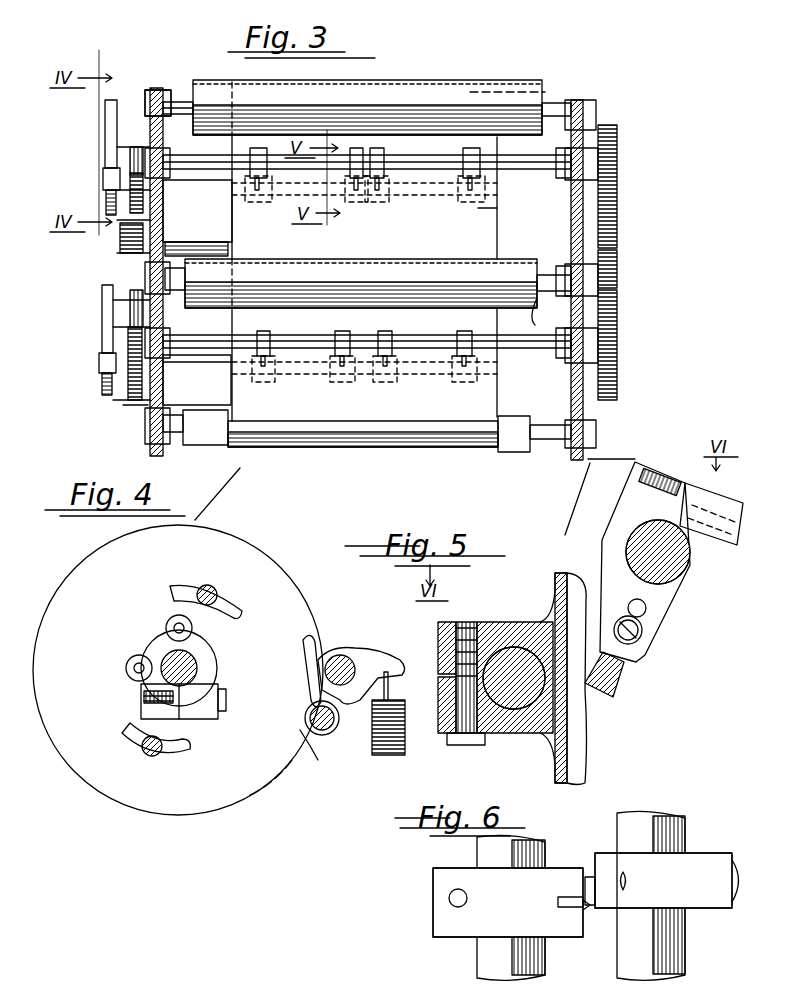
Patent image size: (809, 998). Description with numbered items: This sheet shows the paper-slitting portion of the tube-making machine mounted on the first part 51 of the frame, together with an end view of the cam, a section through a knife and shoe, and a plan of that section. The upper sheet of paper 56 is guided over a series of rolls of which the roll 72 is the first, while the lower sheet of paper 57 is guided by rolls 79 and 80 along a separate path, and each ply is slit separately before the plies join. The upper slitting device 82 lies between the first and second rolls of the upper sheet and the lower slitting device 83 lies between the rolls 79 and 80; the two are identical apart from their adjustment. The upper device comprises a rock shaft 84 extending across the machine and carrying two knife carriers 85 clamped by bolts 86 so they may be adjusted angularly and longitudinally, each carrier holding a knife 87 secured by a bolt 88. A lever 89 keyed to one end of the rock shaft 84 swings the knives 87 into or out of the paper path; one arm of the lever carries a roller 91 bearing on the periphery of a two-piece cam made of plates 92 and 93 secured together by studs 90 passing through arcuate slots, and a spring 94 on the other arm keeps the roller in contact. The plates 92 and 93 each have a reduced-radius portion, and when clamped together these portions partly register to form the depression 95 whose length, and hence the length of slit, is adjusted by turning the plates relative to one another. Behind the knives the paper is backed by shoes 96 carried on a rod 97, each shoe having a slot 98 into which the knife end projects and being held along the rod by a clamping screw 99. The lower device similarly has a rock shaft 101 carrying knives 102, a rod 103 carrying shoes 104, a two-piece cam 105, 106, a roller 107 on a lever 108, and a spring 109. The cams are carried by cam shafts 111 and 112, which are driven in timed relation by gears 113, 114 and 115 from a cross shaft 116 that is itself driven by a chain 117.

In FIG. 3, the first part of the frame 51 is at (150, 441).
In FIG. 3, the upper sheet of paper 56 is at (475, 92).
In FIG. 3, the lower sheet of paper 57 is at (514, 472).
In FIG. 3, the roll 72 is at (525, 108).
In FIG. 3, the roll 79 is at (551, 316).
In FIG. 3, the roll 80 is at (205, 430).
In FIG. 3, the upper slitting device 82 is at (94, 185).
In FIG. 3, the lower slitting device 83 is at (92, 340).
In FIG. 3, the rock shaft 84 is at (520, 165).
In FIG. 4, the rock shaft 84 is at (342, 662).
In FIG. 5, the rock shaft 84 is at (692, 582).
In FIG. 6, the rock shaft 84 is at (625, 845).
In FIG. 5, the knife carrier 85 is at (685, 600).
In FIG. 6, the knife carrier 85 is at (710, 862).
In FIG. 5, the bolt 86 is at (746, 522).
In FIG. 6, the bolt 86 is at (735, 905).
In FIG. 5, the knife 87 is at (620, 683).
In FIG. 6, the knife 87 is at (590, 908).
In FIG. 5, the bolt 88 is at (642, 640).
In FIG. 4, the lever 89 is at (360, 655).
In FIG. 4, the stud 90 is at (210, 591).
In FIG. 3, the roller 91 is at (105, 182).
In FIG. 4, the roller 91 is at (338, 728).
In FIG. 3, the cam plate 92 is at (122, 106).
In FIG. 4, the cam plate 92 is at (308, 636).
In FIG. 3, the cam plate 93 is at (110, 124).
In FIG. 4, the cam plate 93 is at (272, 780).
In FIG. 4, the spring 94 is at (386, 757).
In FIG. 4, the depression 95 is at (305, 748).
In FIG. 3, the shoe 96 is at (345, 188).
In FIG. 5, the shoe 96 is at (550, 722).
In FIG. 6, the shoe 96 is at (450, 880).
In FIG. 3, the rod 97 is at (207, 183).
In FIG. 5, the rod 97 is at (515, 655).
In FIG. 6, the rod 97 is at (490, 950).
In FIG. 5, the slot 98 is at (578, 752).
In FIG. 6, the slot 98 is at (572, 897).
In FIG. 5, the clamping screw 99 is at (472, 745).
In FIG. 6, the clamping screw 99 is at (450, 898).
In FIG. 3, the rock shaft 101 is at (315, 347).
In FIG. 3, the knife 102 is at (258, 368).
In FIG. 3, the rod 103 is at (190, 360).
In FIG. 3, the shoe 104 is at (352, 378).
In FIG. 3, the cam plate 105 is at (124, 260).
In FIG. 3, the cam plate 106 is at (103, 306).
In FIG. 3, the roller 107 is at (100, 362).
In FIG. 3, the lever 108 is at (100, 387).
In FIG. 3, the spring 109 is at (128, 397).
In FIG. 3, the cam shaft 111 is at (208, 157).
In FIG. 4, the cam shaft 111 is at (176, 668).
In FIG. 3, the cam shaft 112 is at (216, 347).
In FIG. 3, the gear 113 is at (612, 178).
In FIG. 3, the gear 114 is at (610, 262).
In FIG. 3, the gear 115 is at (612, 358).
In FIG. 3, the cross shaft 116 is at (548, 256).
In FIG. 3, the chain 117 is at (120, 250).